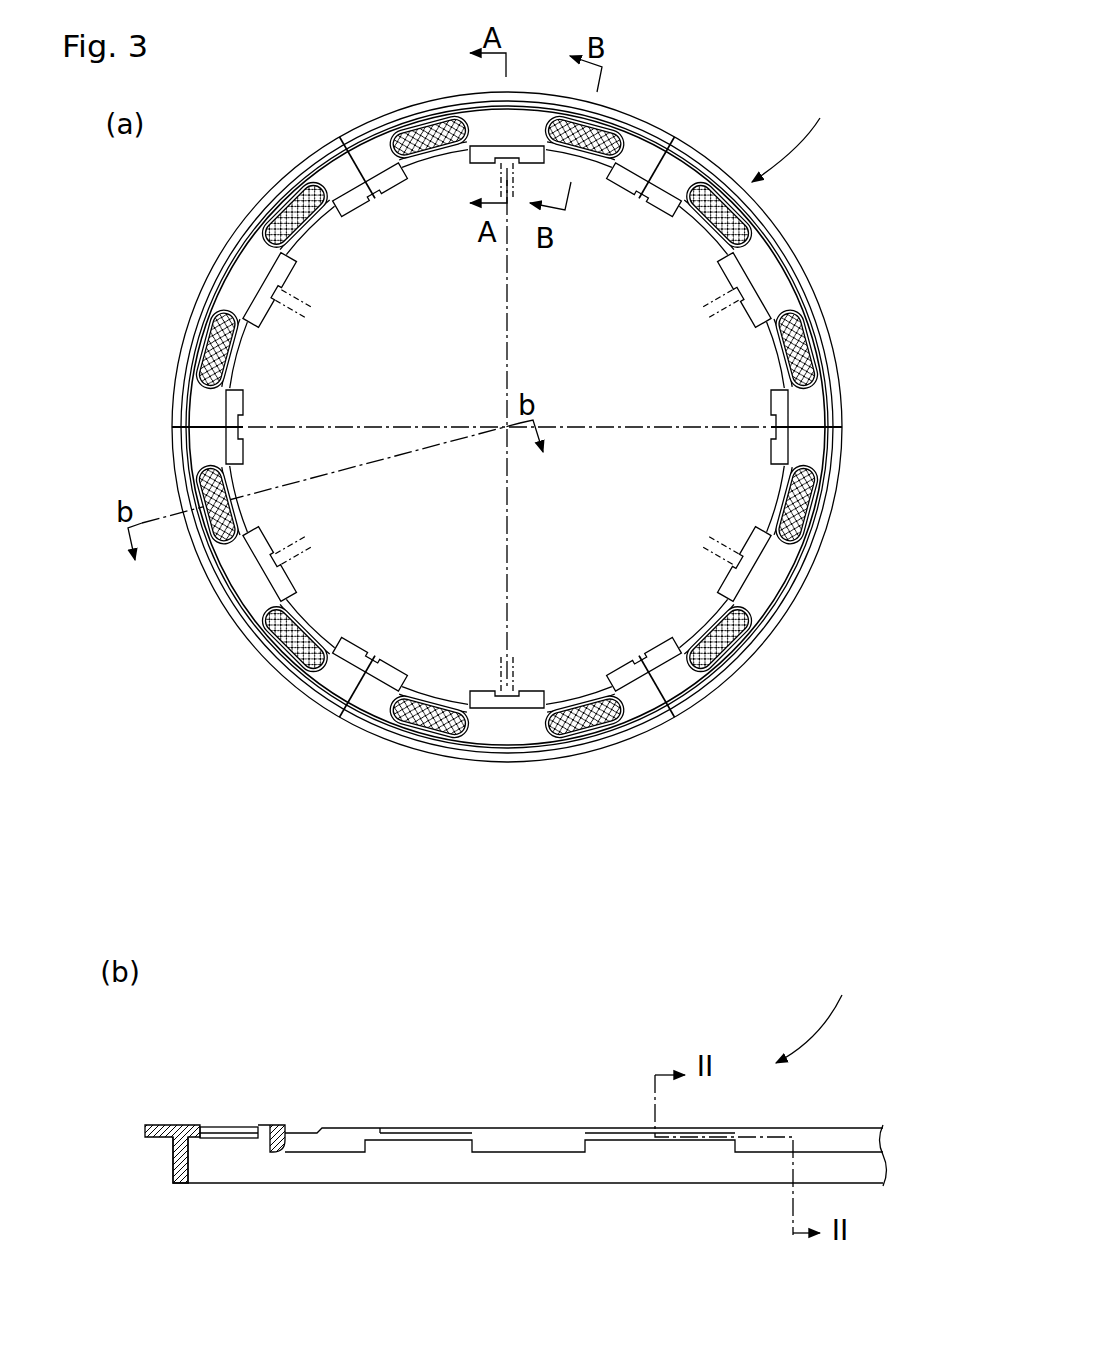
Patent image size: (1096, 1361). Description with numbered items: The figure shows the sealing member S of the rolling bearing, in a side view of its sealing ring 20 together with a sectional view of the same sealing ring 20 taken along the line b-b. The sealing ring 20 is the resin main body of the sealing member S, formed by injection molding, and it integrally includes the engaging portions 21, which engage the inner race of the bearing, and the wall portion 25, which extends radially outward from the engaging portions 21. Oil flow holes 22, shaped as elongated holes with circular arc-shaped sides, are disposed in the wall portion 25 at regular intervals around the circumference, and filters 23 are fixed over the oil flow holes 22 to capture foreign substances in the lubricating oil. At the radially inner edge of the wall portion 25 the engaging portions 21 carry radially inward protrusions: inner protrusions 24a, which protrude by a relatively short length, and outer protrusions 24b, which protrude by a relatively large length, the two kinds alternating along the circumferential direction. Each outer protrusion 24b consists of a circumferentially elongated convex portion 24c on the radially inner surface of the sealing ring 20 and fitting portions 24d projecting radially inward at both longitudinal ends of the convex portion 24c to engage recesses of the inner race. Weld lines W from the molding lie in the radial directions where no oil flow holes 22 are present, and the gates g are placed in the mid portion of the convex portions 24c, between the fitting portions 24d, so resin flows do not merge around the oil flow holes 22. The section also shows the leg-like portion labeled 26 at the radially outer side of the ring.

The sealing member S is at (806, 577).
The sealing ring 20 is at (383, 104).
The engaging portion 21 is at (822, 1138).
The oil flow hole 22 is at (625, 127).
The filter 23 is at (443, 122).
The inner protrusion 24a is at (312, 232).
The outer protrusion 24b is at (362, 205).
The convex portion 24c is at (497, 688).
The fitting portion 24d is at (247, 452).
The wall portion 25 is at (197, 1125).
The leg portion 26 is at (175, 1165).
The weld line W is at (347, 152).
The gate g is at (215, 648).